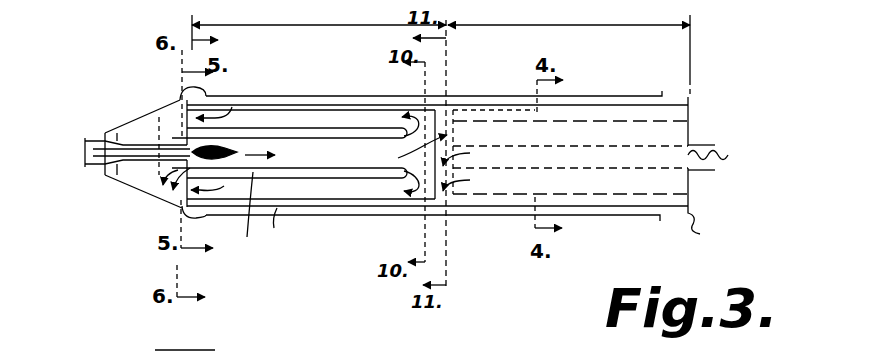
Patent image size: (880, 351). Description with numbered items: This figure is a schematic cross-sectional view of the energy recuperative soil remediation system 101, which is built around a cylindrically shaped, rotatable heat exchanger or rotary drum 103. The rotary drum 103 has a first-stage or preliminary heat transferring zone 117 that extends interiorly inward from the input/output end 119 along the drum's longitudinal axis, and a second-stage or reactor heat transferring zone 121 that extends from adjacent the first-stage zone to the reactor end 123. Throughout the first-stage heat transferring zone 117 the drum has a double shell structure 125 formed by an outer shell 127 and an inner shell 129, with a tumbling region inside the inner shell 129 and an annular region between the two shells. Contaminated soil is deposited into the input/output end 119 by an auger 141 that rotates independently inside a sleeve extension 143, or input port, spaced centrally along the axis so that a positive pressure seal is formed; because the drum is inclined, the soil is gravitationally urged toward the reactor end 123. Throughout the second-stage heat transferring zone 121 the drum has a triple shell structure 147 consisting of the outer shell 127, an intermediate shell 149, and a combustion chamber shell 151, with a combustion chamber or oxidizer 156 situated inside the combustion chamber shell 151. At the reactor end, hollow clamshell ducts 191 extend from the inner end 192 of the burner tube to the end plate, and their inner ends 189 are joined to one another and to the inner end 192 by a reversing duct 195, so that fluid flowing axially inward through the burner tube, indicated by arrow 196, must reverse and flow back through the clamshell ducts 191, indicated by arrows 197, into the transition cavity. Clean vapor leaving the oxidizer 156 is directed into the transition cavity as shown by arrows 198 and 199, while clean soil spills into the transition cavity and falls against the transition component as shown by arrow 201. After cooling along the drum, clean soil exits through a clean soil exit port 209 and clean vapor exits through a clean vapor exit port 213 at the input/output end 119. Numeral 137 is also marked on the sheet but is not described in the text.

The energy recuperative soil remediation system 101 is at (606, 229).
The rotary drum 103 is at (322, 97).
The first-stage heat transferring zone 117 is at (547, 27).
The input/output end 119 is at (690, 112).
The second-stage heat transferring zone 121 is at (340, 26).
The reactor end 123 is at (225, 96).
The double shell structure 125 is at (613, 78).
The outer shell 127 is at (337, 214).
The inner shell 129 is at (487, 210).
The tube 137 is at (150, 341).
The auger 141 is at (734, 154).
The sleeve extension 143 is at (704, 173).
The triple shell structure 147 is at (308, 68).
The intermediate shell 149 is at (291, 231).
The combustion chamber shell 151 is at (253, 219).
The combustion chamber 156 is at (306, 163).
The inner ends of clamshell ducts 189 is at (375, 120).
The clamshell ducts 191 is at (344, 190).
The inner end of burner tube 192 is at (395, 128).
The reversing duct 195 is at (447, 100).
The arrow indicating fluid flow through burner tube 196 is at (243, 124).
The arrows indicating reversed flow through clamshell ducts 197 is at (452, 135).
The clean vapor arrow 198 is at (182, 90).
The clean vapor arrow 199 is at (199, 210).
The arrow indicating clean soil spilling 201 is at (158, 180).
The clean soil exit port 209 is at (715, 229).
The clean vapor exit port 213 is at (690, 98).